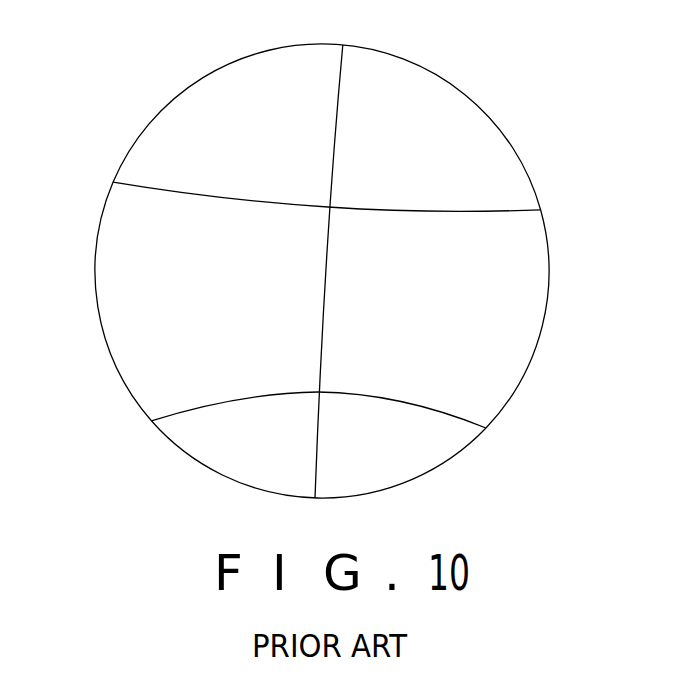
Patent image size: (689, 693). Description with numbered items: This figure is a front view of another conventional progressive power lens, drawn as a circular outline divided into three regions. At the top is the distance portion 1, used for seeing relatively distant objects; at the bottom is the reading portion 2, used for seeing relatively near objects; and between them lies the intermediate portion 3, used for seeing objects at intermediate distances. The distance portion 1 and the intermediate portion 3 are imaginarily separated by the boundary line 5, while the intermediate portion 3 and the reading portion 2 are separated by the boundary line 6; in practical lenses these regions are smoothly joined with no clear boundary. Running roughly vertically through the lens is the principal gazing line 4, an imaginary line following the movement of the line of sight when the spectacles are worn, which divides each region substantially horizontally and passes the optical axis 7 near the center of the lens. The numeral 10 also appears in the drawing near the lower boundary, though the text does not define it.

The distance portion 1 is at (146, 152).
The reading portion 2 is at (227, 458).
The intermediate portion 3 is at (113, 286).
The principal gazing line 4 is at (332, 100).
The boundary line 5 is at (455, 207).
The boundary line 6 is at (452, 408).
The optical axis 7 is at (328, 207).
The lower dividing line junction 10 is at (326, 393).